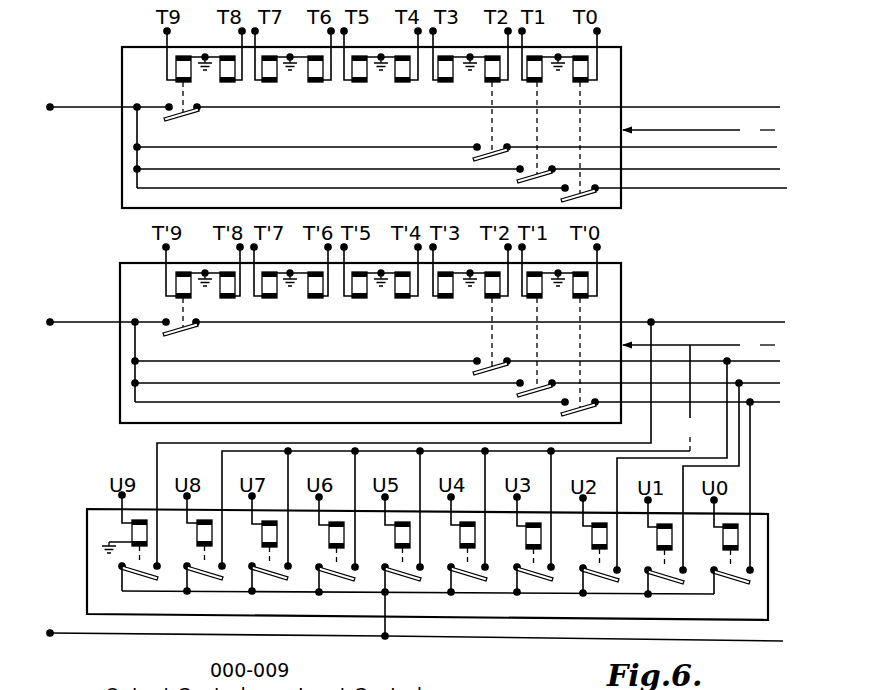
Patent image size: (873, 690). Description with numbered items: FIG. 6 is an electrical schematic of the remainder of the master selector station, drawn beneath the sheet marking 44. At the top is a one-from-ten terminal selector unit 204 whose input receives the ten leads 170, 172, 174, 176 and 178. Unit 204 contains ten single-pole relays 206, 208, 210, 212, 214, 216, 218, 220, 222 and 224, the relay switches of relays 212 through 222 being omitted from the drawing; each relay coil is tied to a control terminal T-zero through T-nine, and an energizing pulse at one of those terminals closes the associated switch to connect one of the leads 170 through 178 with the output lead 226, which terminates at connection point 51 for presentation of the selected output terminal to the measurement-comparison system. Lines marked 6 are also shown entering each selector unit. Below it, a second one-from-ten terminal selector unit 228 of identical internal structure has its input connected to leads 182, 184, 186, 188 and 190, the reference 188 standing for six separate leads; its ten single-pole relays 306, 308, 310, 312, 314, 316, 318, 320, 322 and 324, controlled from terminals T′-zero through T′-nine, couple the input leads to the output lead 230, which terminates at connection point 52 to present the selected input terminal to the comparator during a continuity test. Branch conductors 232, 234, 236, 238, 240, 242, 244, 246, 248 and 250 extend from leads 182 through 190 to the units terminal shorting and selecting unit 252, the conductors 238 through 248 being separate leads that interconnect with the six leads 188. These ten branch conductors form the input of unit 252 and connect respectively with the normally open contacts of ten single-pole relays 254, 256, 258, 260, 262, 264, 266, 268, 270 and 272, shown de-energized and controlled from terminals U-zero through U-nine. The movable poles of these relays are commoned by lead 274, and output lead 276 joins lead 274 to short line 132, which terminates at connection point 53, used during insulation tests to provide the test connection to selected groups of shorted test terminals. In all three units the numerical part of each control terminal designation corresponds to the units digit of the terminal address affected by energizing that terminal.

The 1-from-10 terminal selector unit 204 is at (621, 70).
The unit 44 is at (730, 41).
The single-pole relay 224 is at (170, 93).
The single-pole relay 222 is at (228, 86).
The single-pole relay 220 is at (269, 86).
The single-pole relay 218 is at (314, 86).
The single-pole relay 216 is at (360, 86).
The single-pole relay 214 is at (406, 88).
The single-pole relay 212 is at (444, 86).
The single-pole relay 210 is at (487, 87).
The single-pole relay 208 is at (537, 100).
The single-pole relay 206 is at (576, 87).
The connection point 51 is at (50, 107).
The output lead 226 is at (96, 103).
The lead 178 is at (778, 108).
The lead 176 is at (777, 130).
The lead 174 is at (777, 148).
The lead 172 is at (780, 169).
The lead 170 is at (787, 190).
The second 1-from-10 terminal selector unit 228 is at (621, 285).
The single-pole relay 324 is at (171, 309).
The single-pole relay 322 is at (228, 301).
The single-pole relay 320 is at (269, 301).
The single-pole relay 318 is at (314, 301).
The single-pole relay 316 is at (360, 301).
The single-pole relay 314 is at (400, 301).
The single-pole relay 312 is at (444, 301).
The single-pole relay 310 is at (493, 304).
The single-pole relay 308 is at (529, 303).
The single-pole relay 306 is at (578, 301).
The connection point 52 is at (50, 322).
The output lead 230 is at (85, 316).
The lead 190 is at (773, 322).
The lead 188 is at (777, 345).
The control bus 6 is at (720, 285).
The lead 186 is at (780, 361).
The lead 184 is at (780, 383).
The lead 182 is at (780, 402).
The branch conductor 236 is at (735, 437).
The branch conductor 234 is at (741, 456).
The branch conductor 232 is at (752, 482).
The units terminal shorting and selecting unit 252 is at (87, 509).
The branch conductor 250 is at (157, 443).
The branch conductor 248 is at (222, 452).
The branch conductor 246 is at (288, 452).
The branch conductor 244 is at (355, 452).
The branch conductor 242 is at (420, 452).
The branch conductor 240 is at (485, 452).
The branch conductor 238 is at (551, 452).
The single-pole relay 272 is at (132, 529).
The single-pole relay 270 is at (203, 549).
The single-pole relay 268 is at (268, 549).
The single-pole relay 266 is at (334, 549).
The single-pole relay 264 is at (401, 549).
The single-pole relay 262 is at (467, 549).
The single-pole relay 260 is at (533, 549).
The single-pole relay 258 is at (598, 549).
The single-pole relay 256 is at (663, 551).
The single-pole relay 254 is at (728, 551).
The lead 274 is at (435, 596).
The output lead 276 is at (388, 623).
The connection point 53 is at (50, 633).
The short line 132 is at (783, 641).